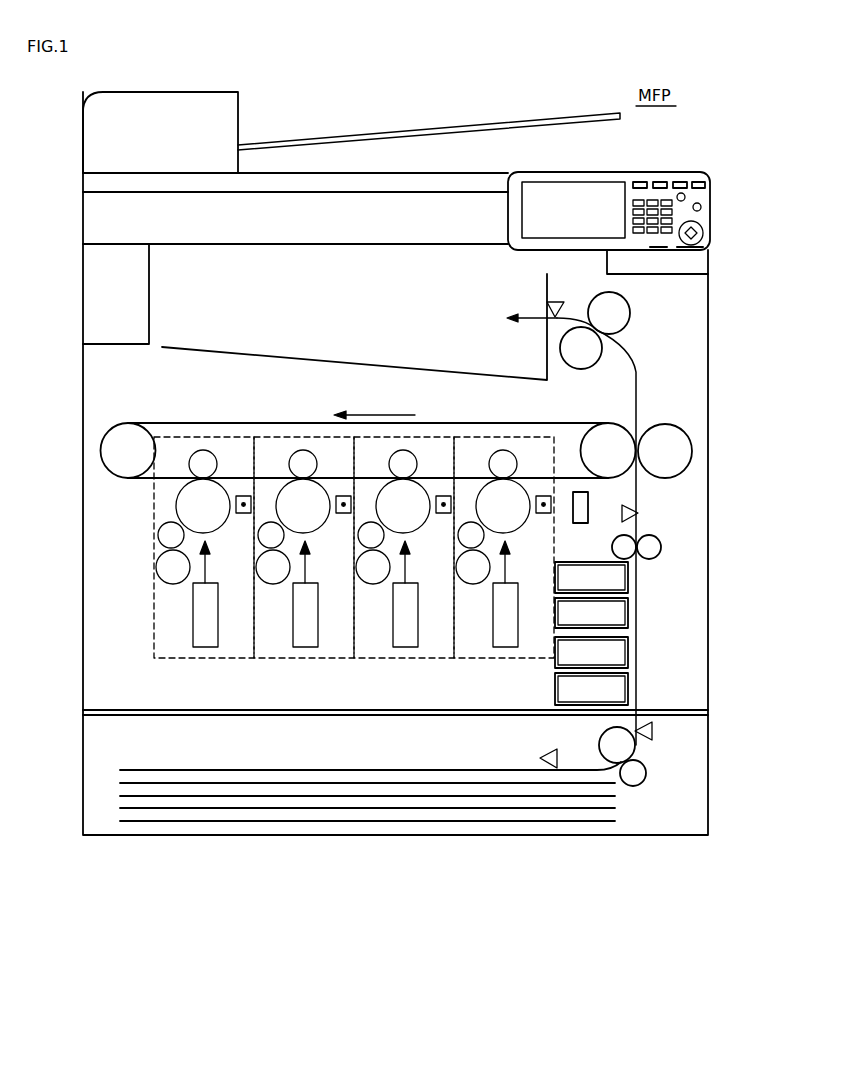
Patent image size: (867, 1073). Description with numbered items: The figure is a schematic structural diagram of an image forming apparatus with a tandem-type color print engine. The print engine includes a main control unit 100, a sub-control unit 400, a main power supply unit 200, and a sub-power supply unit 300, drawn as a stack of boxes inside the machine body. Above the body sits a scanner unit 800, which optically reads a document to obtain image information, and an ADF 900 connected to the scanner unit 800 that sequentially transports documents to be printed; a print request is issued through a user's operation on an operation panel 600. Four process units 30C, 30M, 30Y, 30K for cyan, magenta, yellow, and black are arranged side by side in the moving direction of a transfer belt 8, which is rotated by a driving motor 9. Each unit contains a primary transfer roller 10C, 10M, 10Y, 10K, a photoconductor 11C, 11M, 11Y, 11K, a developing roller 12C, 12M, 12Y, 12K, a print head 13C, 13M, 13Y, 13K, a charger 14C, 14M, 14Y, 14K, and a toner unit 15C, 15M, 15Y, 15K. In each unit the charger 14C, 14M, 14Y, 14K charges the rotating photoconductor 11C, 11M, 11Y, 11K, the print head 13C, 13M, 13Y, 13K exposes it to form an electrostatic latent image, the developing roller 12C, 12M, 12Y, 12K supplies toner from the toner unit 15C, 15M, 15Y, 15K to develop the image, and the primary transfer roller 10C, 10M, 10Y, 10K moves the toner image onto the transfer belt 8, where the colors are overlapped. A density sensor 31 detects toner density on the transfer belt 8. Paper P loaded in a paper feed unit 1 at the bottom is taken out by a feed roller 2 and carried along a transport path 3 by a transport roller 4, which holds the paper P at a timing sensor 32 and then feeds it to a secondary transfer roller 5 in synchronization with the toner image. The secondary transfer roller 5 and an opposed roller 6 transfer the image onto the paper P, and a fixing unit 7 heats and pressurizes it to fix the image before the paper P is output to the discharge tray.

The paper feed unit 1 is at (695, 808).
The feed roller 2 is at (660, 751).
The transport path 3 is at (640, 575).
The transport roller 4 is at (678, 549).
The secondary transfer roller 5 is at (668, 441).
The opposed roller 6 is at (616, 437).
The fixing unit 7 is at (648, 328).
The transfer belt 8 is at (157, 423).
The driving motor 9 is at (124, 437).
The primary transfer roller 10C is at (200, 450).
The primary transfer roller 10M is at (300, 450).
The primary transfer roller 10Y is at (405, 450).
The primary transfer roller 10K is at (505, 450).
The photoconductor 11C is at (183, 503).
The photoconductor 11M is at (282, 500).
The photoconductor 11Y is at (383, 500).
The photoconductor 11K is at (520, 520).
The developing roller 12C is at (160, 531).
The developing roller 12M is at (257, 535).
The developing roller 12Y is at (357, 535).
The developing roller 12K is at (457, 535).
The print head 13C is at (212, 612).
The print head 13M is at (312, 612).
The print head 13Y is at (412, 612).
The print head 13K is at (512, 612).
The charger 14C is at (243, 492).
The charger 14M is at (343, 492).
The charger 14Y is at (443, 492).
The charger 14K is at (543, 492).
The toner unit 15C is at (163, 567).
The toner unit 15M is at (270, 583).
The toner unit 15Y is at (370, 583).
The toner unit 15K is at (470, 583).
The process unit 30C is at (141, 529).
The process unit 30M is at (287, 529).
The process unit 30Y is at (404, 539).
The process unit 30K is at (502, 539).
The density sensor 31 is at (588, 497).
The timing sensor 32 is at (638, 508).
The main control unit 100 is at (628, 583).
The main power supply unit 200 is at (628, 652).
The sub-power supply unit 300 is at (628, 688).
The sub-control unit 400 is at (628, 618).
The operation panel 600 is at (705, 194).
The scanner unit 800 is at (95, 218).
The ADF 900 is at (262, 101).
The paper P is at (262, 808).